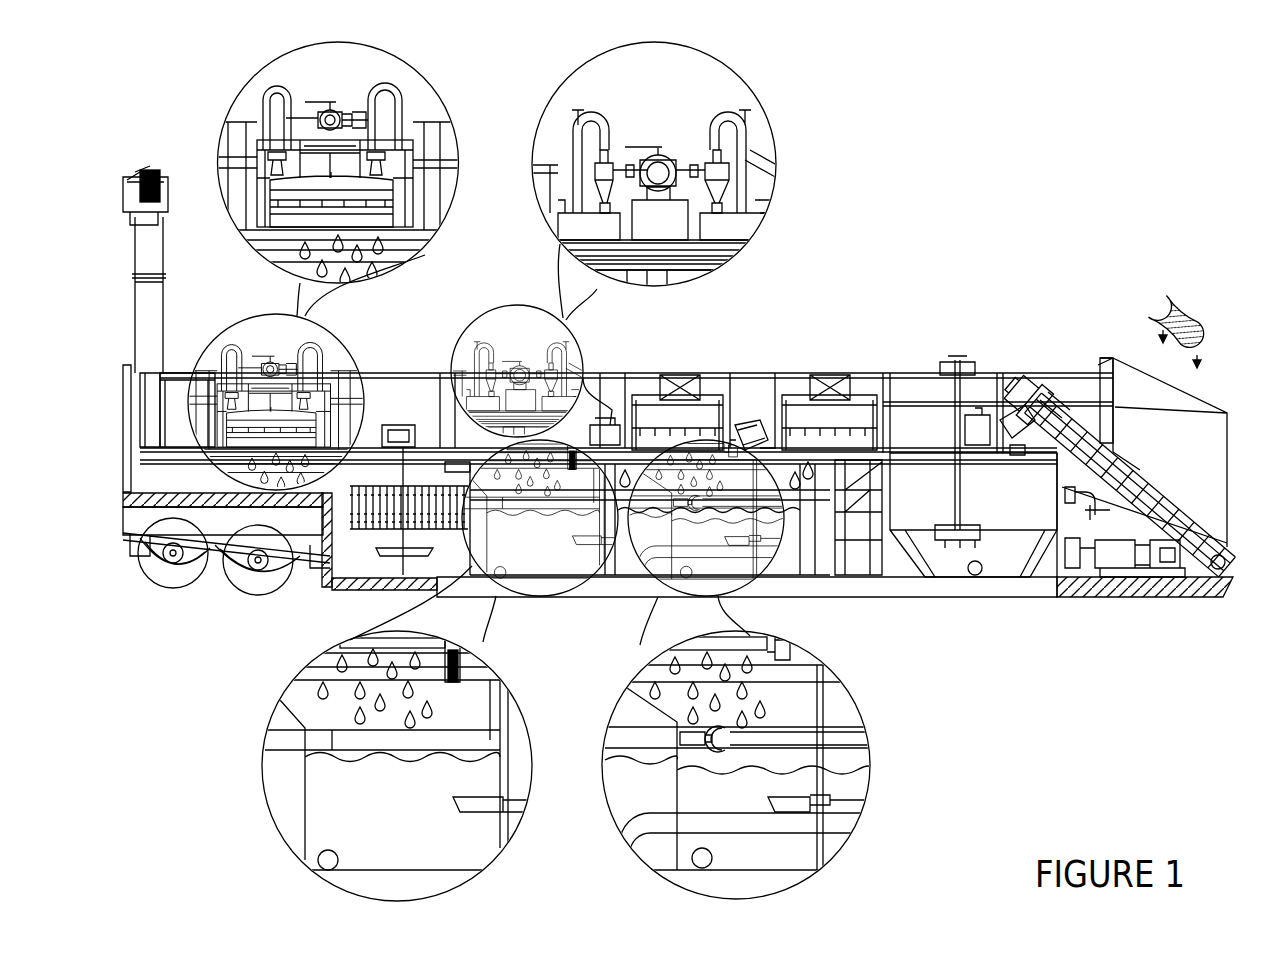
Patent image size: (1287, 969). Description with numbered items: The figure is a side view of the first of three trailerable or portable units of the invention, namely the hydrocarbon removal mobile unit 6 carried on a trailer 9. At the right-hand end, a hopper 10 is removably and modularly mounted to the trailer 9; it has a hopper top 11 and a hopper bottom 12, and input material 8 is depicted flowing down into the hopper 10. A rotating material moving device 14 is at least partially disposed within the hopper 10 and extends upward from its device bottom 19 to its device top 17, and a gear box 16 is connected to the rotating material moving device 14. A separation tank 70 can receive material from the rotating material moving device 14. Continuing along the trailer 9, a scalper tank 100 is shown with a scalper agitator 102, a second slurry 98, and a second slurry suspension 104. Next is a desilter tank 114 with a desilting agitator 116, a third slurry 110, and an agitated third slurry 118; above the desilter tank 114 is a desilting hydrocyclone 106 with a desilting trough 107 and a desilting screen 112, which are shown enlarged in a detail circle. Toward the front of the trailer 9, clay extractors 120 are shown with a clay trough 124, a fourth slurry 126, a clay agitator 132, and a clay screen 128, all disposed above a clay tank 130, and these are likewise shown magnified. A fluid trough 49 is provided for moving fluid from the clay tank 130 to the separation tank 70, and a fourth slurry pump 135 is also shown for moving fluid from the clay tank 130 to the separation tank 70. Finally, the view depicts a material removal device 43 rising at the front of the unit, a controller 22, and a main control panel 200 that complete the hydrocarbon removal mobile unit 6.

The hydrocarbon removal mobile unit 6 is at (1150, 216).
The input material 8 is at (1190, 305).
The trailer 9 is at (897, 588).
The hopper 10 is at (1212, 472).
The hopper top 11 is at (1133, 357).
The hopper bottom 12 is at (1217, 555).
The rotating material moving device 14 is at (1188, 525).
The gear box 16 is at (1007, 430).
The device top 17 is at (1080, 403).
The device bottom 19 is at (1196, 597).
The controller 22 is at (148, 352).
The material removal device 43 is at (150, 257).
The fluid trough 49 is at (455, 465).
The separation tank 70 is at (1042, 582).
The second slurry 98 is at (655, 690).
The scalper tank 100 is at (818, 585).
The scalper agitator 102 is at (755, 437).
The second slurry suspension 104 is at (843, 767).
The desilting hydrocyclone 106 is at (597, 170).
The desilting trough 107 is at (735, 215).
The third slurry 110 is at (318, 688).
The desilting screen 112 is at (690, 262).
The desilter tank 114 is at (656, 598).
The desilting agitator 116 is at (615, 430).
The agitated third slurry 118 is at (520, 774).
The clay extractors 120 is at (262, 95).
The clay trough 124 is at (400, 158).
The fourth slurry 126 is at (377, 266).
The clay screen 128 is at (280, 182).
The clay tank 130 is at (356, 590).
The clay agitator 132 is at (395, 425).
The fourth slurry pump 135 is at (356, 487).
The main control panel 200 is at (182, 392).